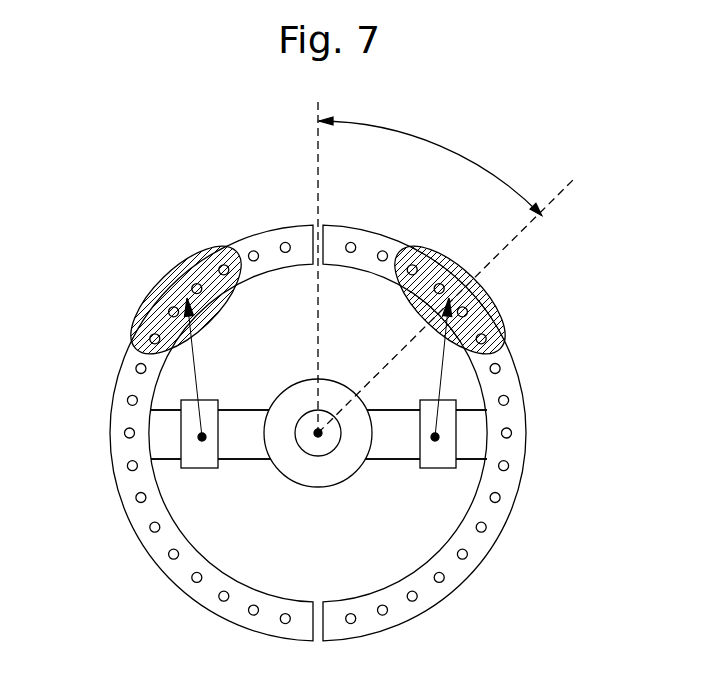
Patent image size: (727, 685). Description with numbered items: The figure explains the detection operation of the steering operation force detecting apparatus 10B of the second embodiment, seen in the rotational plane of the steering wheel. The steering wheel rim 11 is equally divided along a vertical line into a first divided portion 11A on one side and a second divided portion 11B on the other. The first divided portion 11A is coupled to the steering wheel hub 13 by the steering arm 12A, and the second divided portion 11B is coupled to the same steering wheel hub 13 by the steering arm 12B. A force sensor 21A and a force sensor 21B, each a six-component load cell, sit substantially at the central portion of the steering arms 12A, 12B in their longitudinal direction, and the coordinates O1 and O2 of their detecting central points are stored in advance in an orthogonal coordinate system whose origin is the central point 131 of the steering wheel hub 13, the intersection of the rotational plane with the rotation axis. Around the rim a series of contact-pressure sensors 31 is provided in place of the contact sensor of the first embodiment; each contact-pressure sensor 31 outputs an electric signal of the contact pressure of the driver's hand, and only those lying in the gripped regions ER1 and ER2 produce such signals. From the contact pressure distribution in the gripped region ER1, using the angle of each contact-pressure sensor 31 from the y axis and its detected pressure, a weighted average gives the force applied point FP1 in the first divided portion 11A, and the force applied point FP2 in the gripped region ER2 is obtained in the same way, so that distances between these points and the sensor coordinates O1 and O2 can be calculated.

The steering operation force detecting apparatus 10B is at (130, 214).
The steering wheel rim 11 is at (333, 228).
The first divided portion 11A is at (513, 380).
The second divided portion 11B is at (118, 380).
The contact-pressure sensor 31 is at (247, 252).
The gripped region ER2 is at (160, 283).
The gripped region ER1 is at (480, 284).
The force applied point FP1 is at (430, 310).
The force applied point FP2 is at (205, 308).
The steering arm 12A is at (388, 420).
The steering arm 12B is at (240, 423).
The steering wheel hub 13 is at (325, 477).
The central point 131 is at (317, 429).
The force sensor 21A is at (427, 462).
The force sensor 21B is at (205, 462).
The detecting central point coordinate O1 is at (436, 441).
The detecting central point coordinate O2 is at (202, 441).